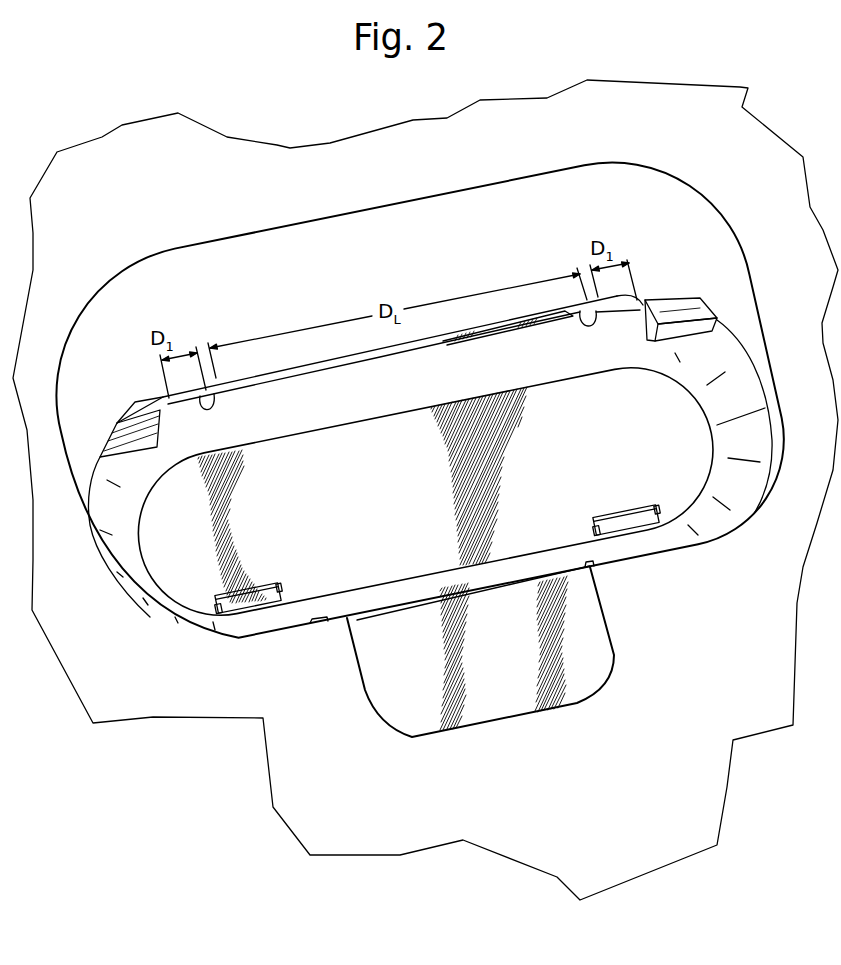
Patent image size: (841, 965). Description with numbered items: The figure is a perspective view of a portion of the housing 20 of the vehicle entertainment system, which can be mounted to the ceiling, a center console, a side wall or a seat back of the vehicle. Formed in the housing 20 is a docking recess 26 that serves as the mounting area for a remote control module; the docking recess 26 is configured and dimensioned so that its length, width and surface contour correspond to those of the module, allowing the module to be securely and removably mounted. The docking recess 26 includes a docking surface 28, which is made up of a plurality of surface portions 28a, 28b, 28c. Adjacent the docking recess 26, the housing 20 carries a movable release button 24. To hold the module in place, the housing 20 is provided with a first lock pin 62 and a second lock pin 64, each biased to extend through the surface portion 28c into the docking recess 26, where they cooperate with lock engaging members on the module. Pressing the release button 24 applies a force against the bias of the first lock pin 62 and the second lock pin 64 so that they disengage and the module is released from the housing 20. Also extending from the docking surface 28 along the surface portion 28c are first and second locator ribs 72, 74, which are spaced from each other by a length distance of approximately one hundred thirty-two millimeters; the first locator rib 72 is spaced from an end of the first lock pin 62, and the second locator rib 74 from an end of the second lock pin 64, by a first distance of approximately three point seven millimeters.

The housing 20 is at (428, 179).
The release button 24 is at (598, 684).
The docking recess 26 is at (114, 325).
The docking surface 28 is at (267, 257).
The surface portion 28a is at (357, 442).
The surface portion 28b is at (297, 412).
The surface portion 28c is at (400, 352).
The first lock pin 62 is at (148, 408).
The second lock pin 64 is at (668, 305).
The first locator rib 72 is at (208, 407).
The second locator rib 74 is at (591, 329).